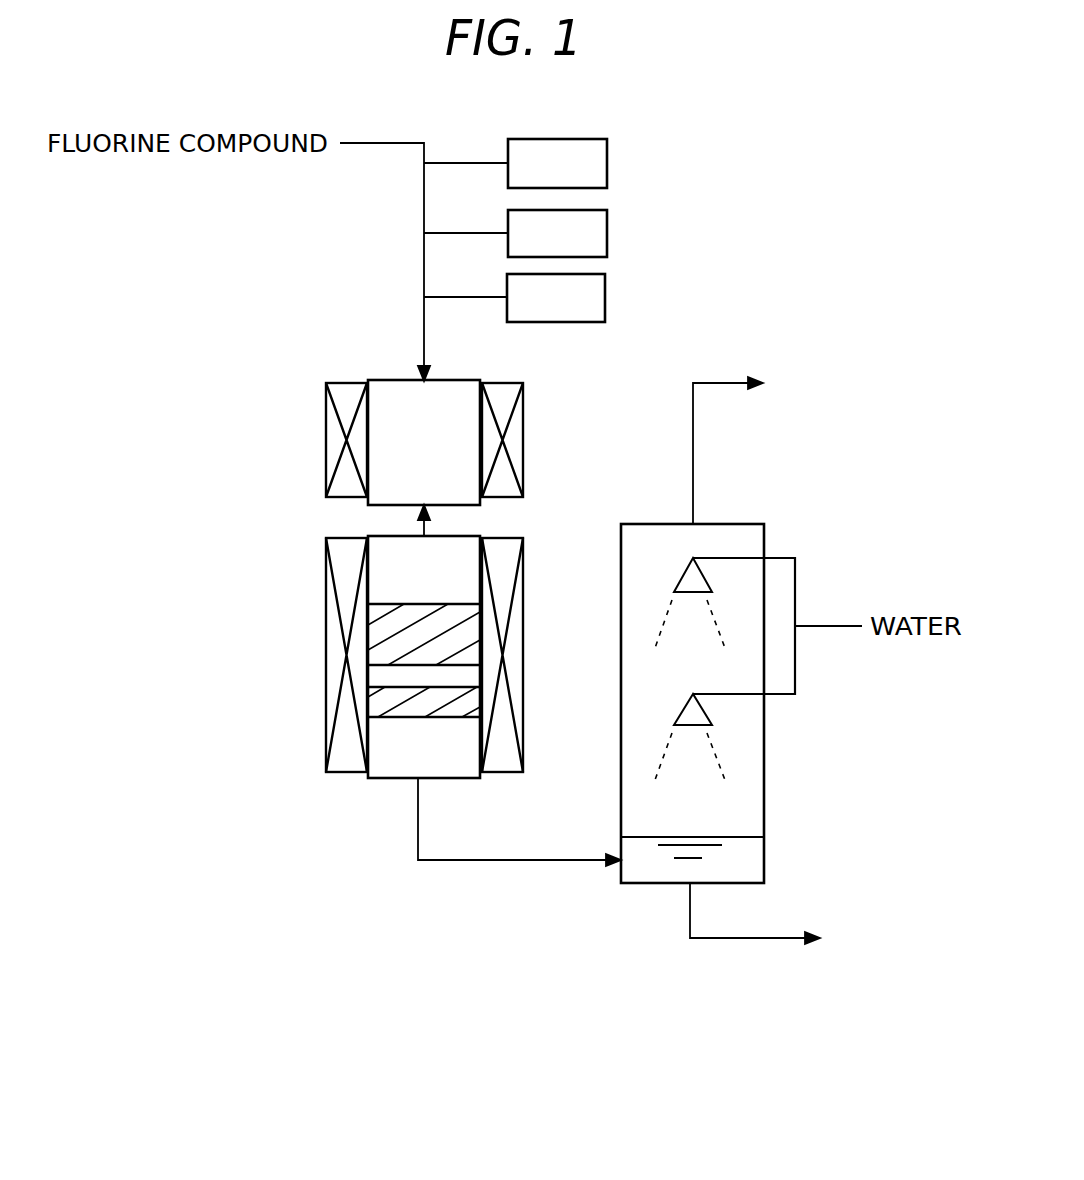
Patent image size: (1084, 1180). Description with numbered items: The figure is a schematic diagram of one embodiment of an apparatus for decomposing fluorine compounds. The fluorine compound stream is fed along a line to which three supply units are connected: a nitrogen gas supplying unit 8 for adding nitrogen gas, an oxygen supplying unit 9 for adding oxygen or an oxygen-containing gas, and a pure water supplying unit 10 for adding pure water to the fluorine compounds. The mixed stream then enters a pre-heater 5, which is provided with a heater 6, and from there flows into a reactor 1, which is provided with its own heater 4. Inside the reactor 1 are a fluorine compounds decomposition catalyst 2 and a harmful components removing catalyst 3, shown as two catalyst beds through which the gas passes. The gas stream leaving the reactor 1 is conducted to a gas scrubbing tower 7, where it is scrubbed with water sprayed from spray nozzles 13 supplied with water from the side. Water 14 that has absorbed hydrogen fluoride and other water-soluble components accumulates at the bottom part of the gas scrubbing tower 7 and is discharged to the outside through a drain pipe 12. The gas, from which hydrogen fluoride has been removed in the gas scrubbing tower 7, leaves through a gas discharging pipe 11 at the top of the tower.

The reactor 1 is at (392, 570).
The fluorine compounds decomposition catalyst 2 is at (392, 637).
The harmful components removing catalyst 3 is at (392, 708).
The heater 4 is at (325, 752).
The pre-heater 5 is at (392, 423).
The heater 6 is at (325, 477).
The gas scrubbing tower 7 is at (764, 785).
The nitrogen gas supplying unit 8 is at (607, 164).
The oxygen supplying unit 9 is at (607, 233).
The pure water supplying unit 10 is at (605, 297).
The gas discharging pipe 11 is at (693, 465).
The drain pipe 12 is at (772, 941).
The spray nozzles 13 is at (683, 575).
The water 14 is at (657, 870).